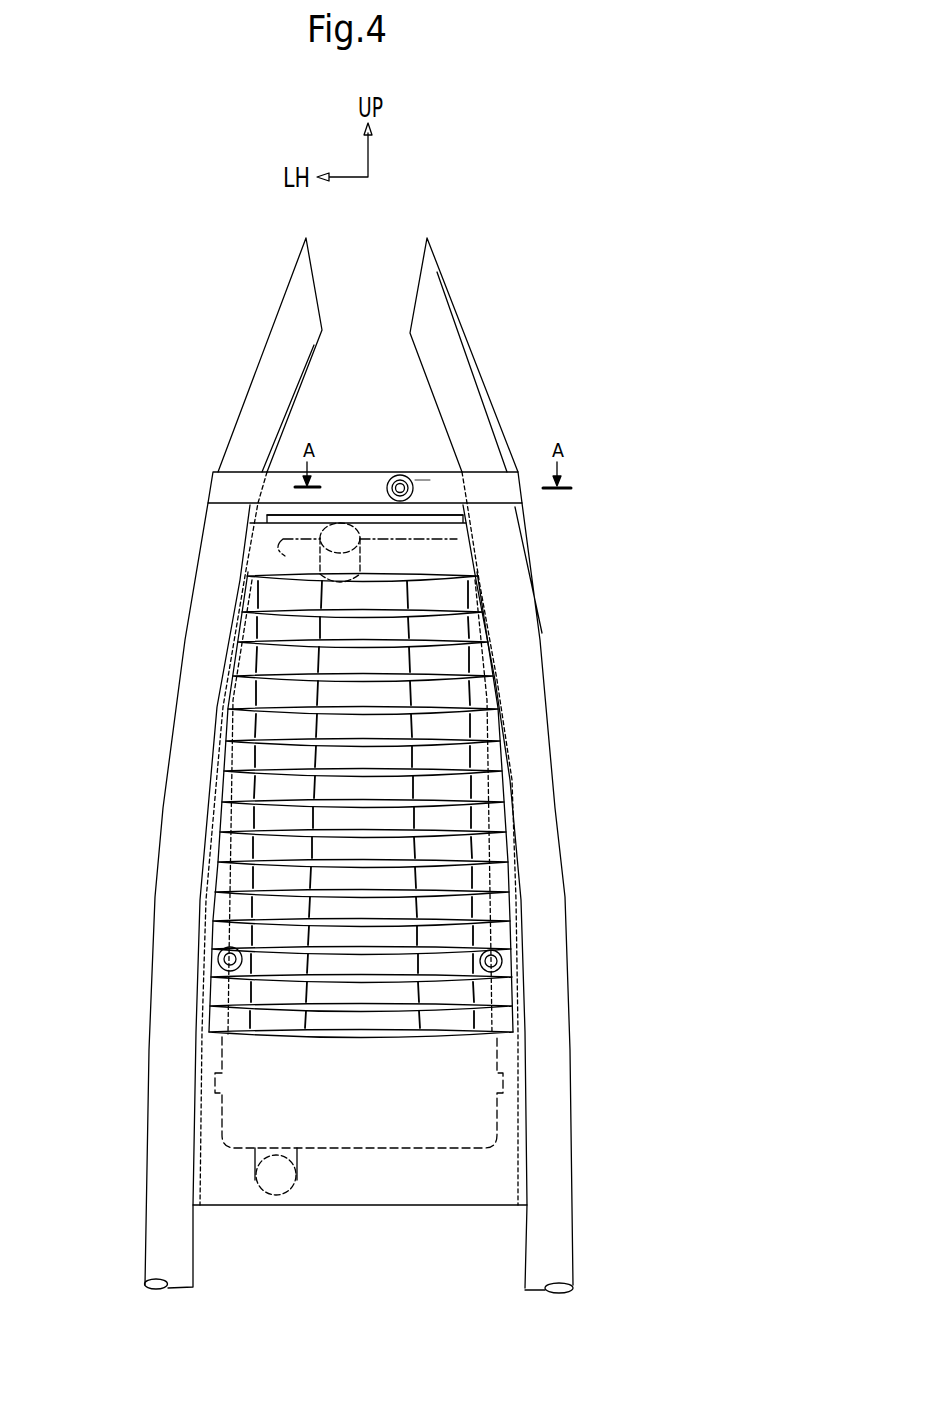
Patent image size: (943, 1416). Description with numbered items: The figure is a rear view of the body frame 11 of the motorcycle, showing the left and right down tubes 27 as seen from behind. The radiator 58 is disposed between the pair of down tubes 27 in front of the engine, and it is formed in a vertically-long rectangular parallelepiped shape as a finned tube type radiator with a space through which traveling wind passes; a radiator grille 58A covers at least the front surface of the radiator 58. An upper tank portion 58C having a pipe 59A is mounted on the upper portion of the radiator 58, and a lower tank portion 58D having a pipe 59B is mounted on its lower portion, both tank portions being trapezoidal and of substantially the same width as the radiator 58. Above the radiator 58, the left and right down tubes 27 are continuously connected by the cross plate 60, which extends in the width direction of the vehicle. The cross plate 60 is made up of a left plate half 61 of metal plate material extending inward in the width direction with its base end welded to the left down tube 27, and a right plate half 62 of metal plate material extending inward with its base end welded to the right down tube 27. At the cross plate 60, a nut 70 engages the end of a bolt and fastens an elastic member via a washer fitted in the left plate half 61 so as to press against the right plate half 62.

The body frame 11 is at (583, 360).
The down tube 27 is at (182, 810).
The radiator 58 is at (263, 727).
The radiator grille 58A is at (453, 707).
The upper tank portion 58C is at (278, 560).
The lower tank portion 58D is at (232, 1130).
The pipe 59A is at (293, 552).
The pipe 59B is at (292, 1190).
The cross plate 60 is at (412, 378).
The left plate half 61 is at (345, 483).
The right plate half 62 is at (426, 480).
The nut 70 is at (402, 500).